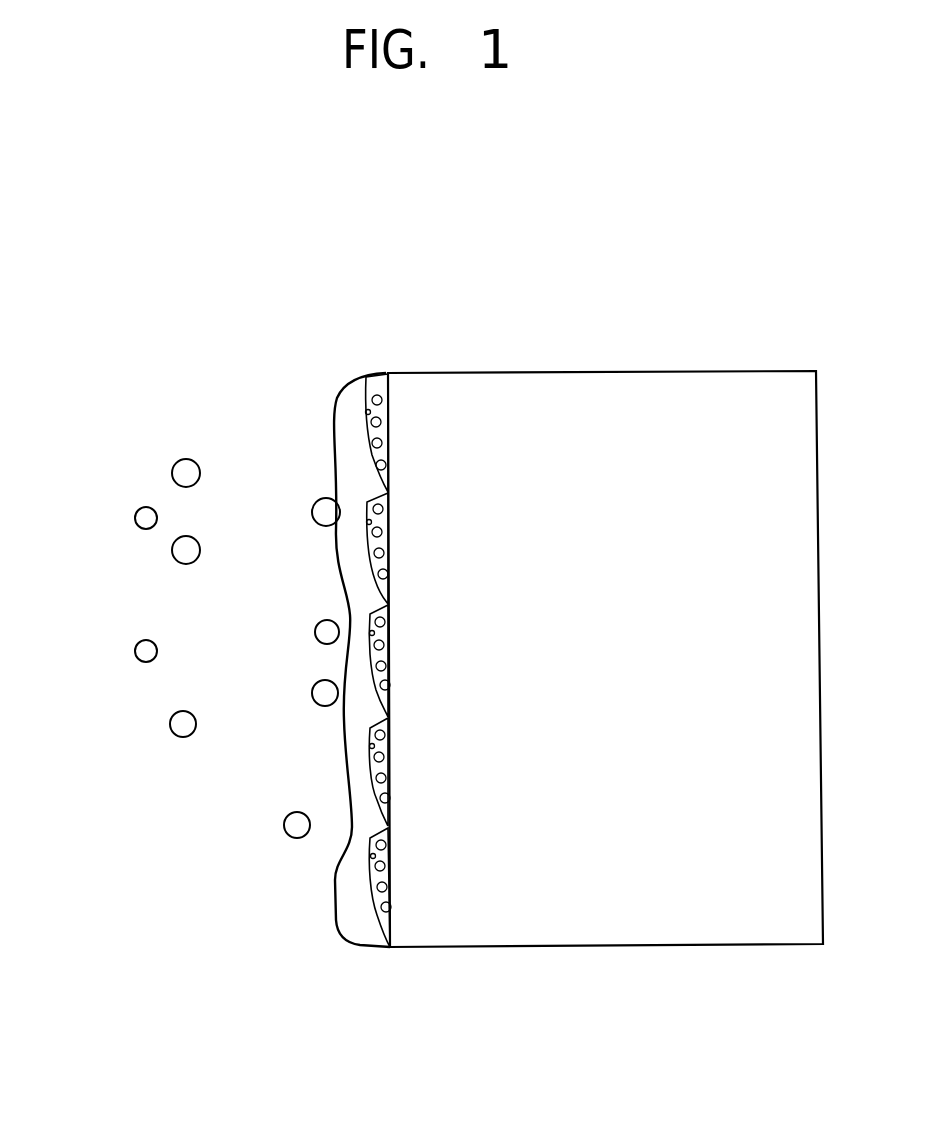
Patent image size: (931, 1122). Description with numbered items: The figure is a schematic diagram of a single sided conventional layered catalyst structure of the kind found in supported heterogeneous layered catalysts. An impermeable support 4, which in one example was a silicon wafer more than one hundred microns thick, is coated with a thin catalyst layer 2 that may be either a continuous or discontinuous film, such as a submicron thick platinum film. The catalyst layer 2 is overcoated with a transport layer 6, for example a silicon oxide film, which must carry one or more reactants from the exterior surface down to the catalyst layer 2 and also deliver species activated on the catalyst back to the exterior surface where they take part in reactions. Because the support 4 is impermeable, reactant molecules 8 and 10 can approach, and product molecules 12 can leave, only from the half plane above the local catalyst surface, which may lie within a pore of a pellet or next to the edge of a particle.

The catalyst layer 2 is at (366, 388).
The impermeable support 4 is at (499, 357).
The transport layer 6 is at (318, 405).
The reactants 8 is at (213, 484).
The reactants 10 is at (291, 625).
The products 12 is at (299, 712).